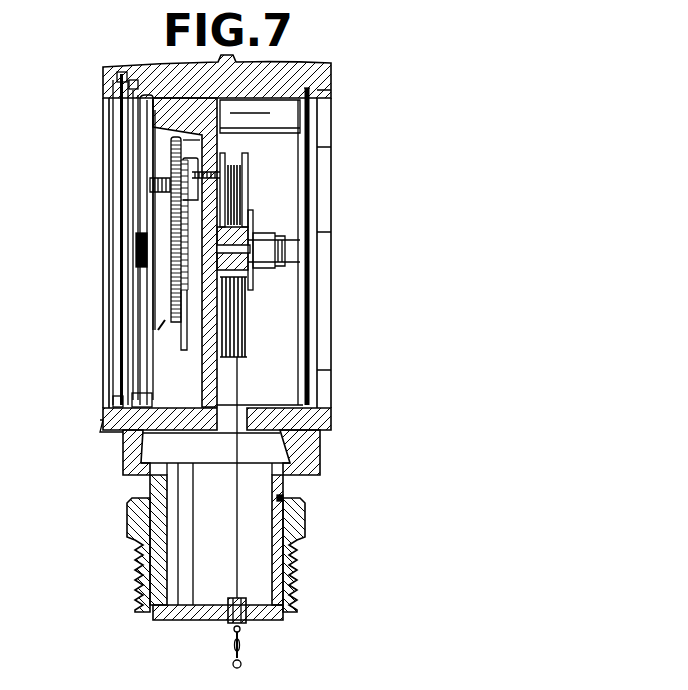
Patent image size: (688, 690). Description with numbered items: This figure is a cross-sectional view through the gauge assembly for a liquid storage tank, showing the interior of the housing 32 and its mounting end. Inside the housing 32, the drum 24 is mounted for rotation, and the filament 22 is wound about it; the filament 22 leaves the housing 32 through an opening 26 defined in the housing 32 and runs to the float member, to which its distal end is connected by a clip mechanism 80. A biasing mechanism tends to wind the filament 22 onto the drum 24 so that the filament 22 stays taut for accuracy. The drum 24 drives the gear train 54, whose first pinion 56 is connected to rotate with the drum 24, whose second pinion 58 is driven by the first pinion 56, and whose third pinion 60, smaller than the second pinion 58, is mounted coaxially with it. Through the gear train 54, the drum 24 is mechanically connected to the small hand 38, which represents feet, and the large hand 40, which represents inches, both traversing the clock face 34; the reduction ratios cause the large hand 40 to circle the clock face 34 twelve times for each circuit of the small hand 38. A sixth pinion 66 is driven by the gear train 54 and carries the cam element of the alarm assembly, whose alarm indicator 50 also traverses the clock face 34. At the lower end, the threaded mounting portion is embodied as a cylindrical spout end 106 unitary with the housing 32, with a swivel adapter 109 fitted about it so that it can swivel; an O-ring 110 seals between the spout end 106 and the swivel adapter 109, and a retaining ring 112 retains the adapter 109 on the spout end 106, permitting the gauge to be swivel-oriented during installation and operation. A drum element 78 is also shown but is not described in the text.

The filament 22 is at (238, 375).
The drum 24 is at (245, 173).
The opening 26 is at (243, 602).
The housing 32 is at (150, 67).
The clock face 34 is at (147, 397).
The small hand 38 is at (143, 162).
The large hand 40 is at (137, 330).
The alarm indicator 50 is at (157, 203).
The gear train 54 is at (167, 327).
The first pinion 56 is at (157, 220).
The second pinion 58 is at (178, 342).
The third pinion 60 is at (150, 328).
The sixth pinion 66 is at (168, 162).
The drum 78 is at (248, 288).
The clip mechanism 80 is at (241, 663).
The spout end 106 is at (282, 515).
The swivel adapter 109 is at (297, 528).
The O-ring 110 is at (282, 498).
The retaining ring 112 is at (283, 605).